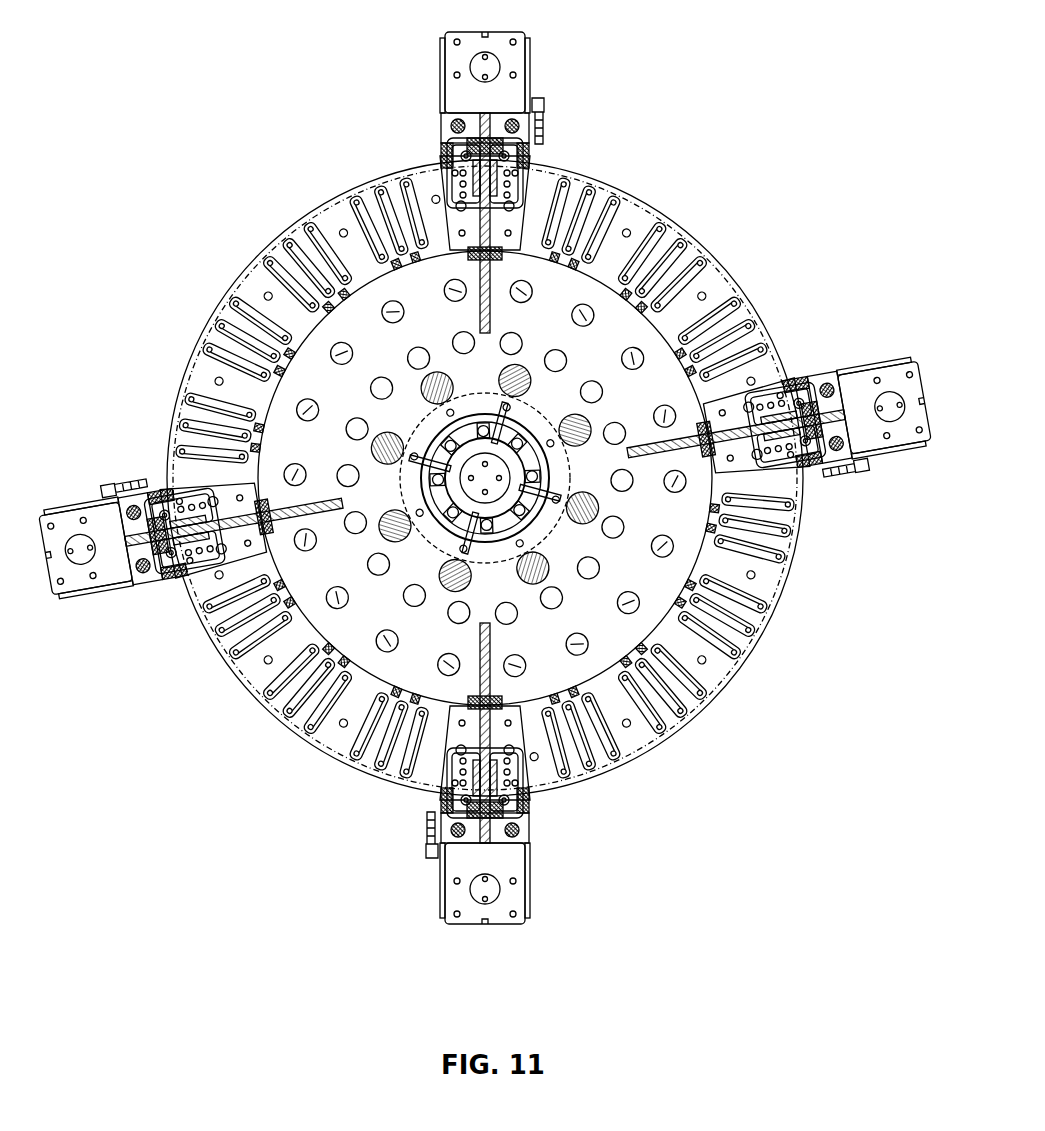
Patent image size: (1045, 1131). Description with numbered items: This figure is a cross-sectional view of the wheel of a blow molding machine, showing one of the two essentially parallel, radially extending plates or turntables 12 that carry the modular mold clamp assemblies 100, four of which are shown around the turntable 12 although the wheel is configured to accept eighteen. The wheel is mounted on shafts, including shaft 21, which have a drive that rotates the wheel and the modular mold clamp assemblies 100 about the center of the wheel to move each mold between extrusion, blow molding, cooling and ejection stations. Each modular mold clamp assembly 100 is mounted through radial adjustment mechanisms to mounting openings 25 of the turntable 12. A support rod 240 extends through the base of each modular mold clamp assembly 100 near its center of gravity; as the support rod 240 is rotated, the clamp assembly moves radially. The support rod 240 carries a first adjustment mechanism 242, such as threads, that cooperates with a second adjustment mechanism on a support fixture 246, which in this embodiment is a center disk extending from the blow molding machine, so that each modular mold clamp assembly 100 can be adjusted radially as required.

The turntable 12 is at (642, 203).
The shaft 21 is at (485, 476).
The mounting opening 25 is at (683, 333).
The modular mold clamp assembly 100 is at (434, 84).
The support rod 240 is at (742, 407).
The first adjustment mechanism 242 is at (717, 470).
The support fixture 246 is at (650, 620).